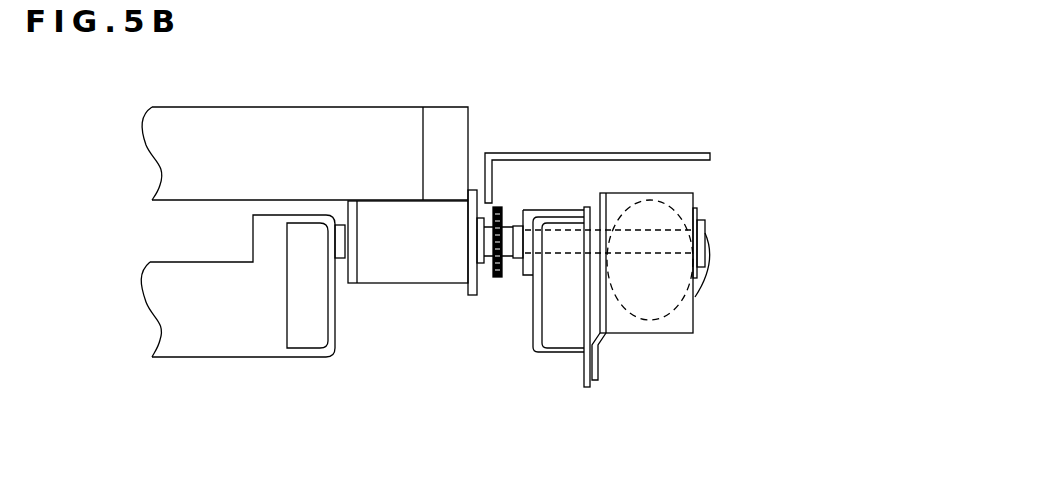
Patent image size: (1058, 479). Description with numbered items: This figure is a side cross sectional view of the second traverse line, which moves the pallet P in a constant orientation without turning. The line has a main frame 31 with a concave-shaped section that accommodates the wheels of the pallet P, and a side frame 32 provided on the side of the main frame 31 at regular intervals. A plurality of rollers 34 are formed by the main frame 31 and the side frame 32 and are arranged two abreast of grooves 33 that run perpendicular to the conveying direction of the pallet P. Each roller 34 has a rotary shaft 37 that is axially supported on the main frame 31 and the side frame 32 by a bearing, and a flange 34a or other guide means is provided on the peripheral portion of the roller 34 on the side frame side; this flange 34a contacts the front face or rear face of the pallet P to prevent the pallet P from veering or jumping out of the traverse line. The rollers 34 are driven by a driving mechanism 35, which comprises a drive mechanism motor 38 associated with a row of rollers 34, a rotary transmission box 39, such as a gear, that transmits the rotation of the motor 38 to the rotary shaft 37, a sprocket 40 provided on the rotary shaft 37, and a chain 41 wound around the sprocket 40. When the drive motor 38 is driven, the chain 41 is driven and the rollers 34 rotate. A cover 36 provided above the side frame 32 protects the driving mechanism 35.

The pallet P is at (308, 118).
The main frame 31 is at (258, 345).
The side frame 32 is at (560, 353).
The groove 33 is at (455, 318).
The roller 34 is at (405, 270).
The flange 34a is at (471, 297).
The driving mechanism 35 is at (700, 333).
The cover 36 is at (667, 152).
The rotary shaft 37 is at (482, 266).
The drive mechanism motor 38 is at (711, 258).
The rotary transmission box 39 is at (652, 333).
The sprocket 40 is at (500, 207).
The chain 41 is at (484, 217).